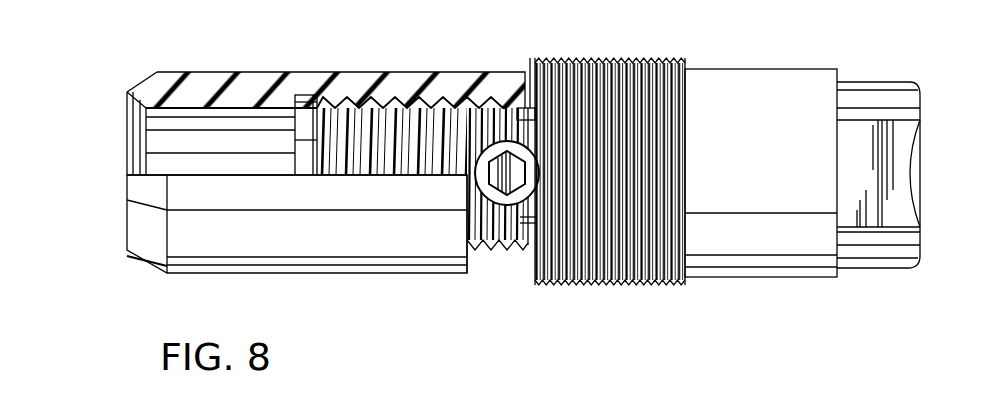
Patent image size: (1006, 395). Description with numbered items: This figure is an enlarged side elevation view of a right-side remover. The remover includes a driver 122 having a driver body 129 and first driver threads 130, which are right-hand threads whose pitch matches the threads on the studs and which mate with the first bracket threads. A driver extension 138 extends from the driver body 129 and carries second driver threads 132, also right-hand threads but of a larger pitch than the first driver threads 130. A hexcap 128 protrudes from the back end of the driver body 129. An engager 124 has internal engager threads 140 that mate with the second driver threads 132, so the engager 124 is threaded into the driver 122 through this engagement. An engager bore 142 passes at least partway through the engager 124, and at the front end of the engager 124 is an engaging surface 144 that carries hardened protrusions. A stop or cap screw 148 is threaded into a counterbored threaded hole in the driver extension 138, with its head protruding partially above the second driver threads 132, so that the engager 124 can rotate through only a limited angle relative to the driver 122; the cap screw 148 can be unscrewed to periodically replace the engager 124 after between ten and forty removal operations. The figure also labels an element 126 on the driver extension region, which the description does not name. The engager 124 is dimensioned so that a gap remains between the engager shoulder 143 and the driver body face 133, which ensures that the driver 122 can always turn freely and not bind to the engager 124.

The driver 122 is at (772, 82).
The engager 124 is at (317, 238).
The threaded stem 126 is at (490, 250).
The hexcap 128 is at (910, 150).
The driver body 129 is at (748, 278).
The first driver threads 130 is at (596, 57).
The second driver threads 132 is at (458, 92).
The driver body face 133 is at (530, 284).
The driver extension 138 is at (405, 130).
The engager threads 140 is at (321, 100).
The engager bore 142 is at (155, 142).
The engager shoulder 143 is at (530, 70).
The engaging surface 144 is at (137, 112).
The cap screw 148 is at (507, 142).